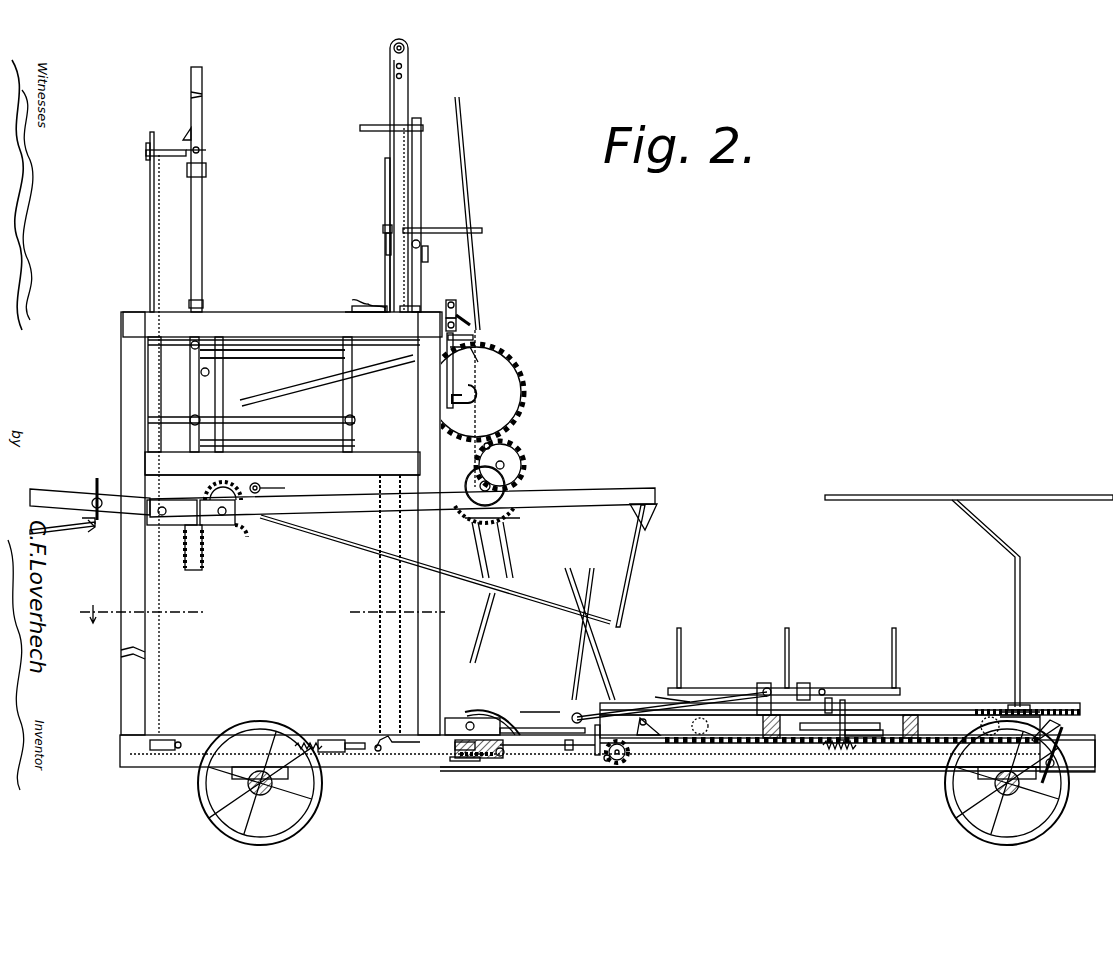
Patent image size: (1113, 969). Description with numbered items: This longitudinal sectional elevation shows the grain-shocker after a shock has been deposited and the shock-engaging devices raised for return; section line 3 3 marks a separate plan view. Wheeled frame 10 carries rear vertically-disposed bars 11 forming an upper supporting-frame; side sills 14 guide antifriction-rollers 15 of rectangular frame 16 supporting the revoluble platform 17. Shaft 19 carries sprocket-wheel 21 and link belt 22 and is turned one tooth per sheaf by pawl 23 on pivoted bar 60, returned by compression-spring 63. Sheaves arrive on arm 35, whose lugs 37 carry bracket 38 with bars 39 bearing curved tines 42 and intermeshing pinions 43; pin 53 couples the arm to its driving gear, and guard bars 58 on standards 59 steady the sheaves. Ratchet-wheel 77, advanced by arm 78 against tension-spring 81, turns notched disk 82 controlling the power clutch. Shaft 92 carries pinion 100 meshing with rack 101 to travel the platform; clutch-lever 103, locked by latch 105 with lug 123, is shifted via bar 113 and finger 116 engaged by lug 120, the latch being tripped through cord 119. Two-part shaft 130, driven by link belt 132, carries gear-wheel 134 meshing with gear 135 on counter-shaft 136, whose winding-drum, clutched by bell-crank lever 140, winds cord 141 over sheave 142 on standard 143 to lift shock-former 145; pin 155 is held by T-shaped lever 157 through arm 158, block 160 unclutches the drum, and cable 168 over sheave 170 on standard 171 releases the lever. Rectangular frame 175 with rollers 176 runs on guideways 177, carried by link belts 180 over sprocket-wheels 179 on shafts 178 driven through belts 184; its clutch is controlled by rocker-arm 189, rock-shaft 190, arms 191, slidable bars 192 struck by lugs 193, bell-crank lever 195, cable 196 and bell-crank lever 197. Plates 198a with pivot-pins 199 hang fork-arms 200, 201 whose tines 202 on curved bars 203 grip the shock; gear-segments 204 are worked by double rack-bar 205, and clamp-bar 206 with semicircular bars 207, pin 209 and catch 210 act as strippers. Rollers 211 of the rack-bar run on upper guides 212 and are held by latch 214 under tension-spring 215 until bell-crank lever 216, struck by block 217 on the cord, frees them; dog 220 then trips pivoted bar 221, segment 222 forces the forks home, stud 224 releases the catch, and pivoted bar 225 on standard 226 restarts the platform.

The section line 3 3 is at (262, 612).
The wheeled frame 10 is at (245, 735).
The vertically-disposed bars 11 is at (121, 683).
The horizontal side sills 14 is at (700, 767).
The antifriction-rollers 15 is at (820, 727).
The rectangular frame 16 is at (935, 703).
The revoluble shock-assembling platform 17 is at (657, 697).
The vertically-disposed shaft 19 is at (845, 722).
The sprocket-wheels 21 is at (905, 735).
The link belt 22 is at (860, 740).
The pawl 23 is at (352, 740).
The arm 35 is at (530, 712).
The upwardly-extending lugs 37 is at (828, 698).
The bracket 38 is at (802, 683).
The transversely-disposed bars 39 is at (767, 686).
The curved tines or prongs 42 is at (681, 632).
The intermeshing pinions 43 is at (757, 686).
The vertically-adjustable pin 53 is at (448, 718).
The curved arms or bars 58 is at (1072, 495).
The vertical standards 59 is at (1022, 605).
The pivoted bar 60 is at (330, 740).
The compression-spring 63 is at (293, 744).
The ratchet-wheel 77 is at (465, 758).
The arm 78 is at (480, 758).
The tension-spring 81 is at (501, 757).
The notched disk 82 is at (455, 762).
The transversely-disposed shaft 92 is at (627, 758).
The pinion 100 is at (598, 757).
The rack 101 is at (752, 744).
The clutch-lever 103 is at (548, 748).
The pivoted latch 105 is at (605, 762).
The shifting bar 113 is at (568, 740).
The finger 116 is at (508, 726).
The cord or chain 119 is at (406, 178).
The depending lug 120 is at (1069, 756).
The projecting lug 123 is at (605, 715).
The two-part shaft 130 is at (480, 396).
The link belt 132 is at (507, 560).
The gear-wheel 134 is at (522, 388).
The gear 135 is at (522, 455).
The counter-shaft 136 is at (505, 485).
The bell-crank lever 140 is at (524, 462).
The cord or chain 141 is at (462, 105).
The sheave 142 is at (412, 46).
The standard 143 is at (390, 75).
The shock support or former 145 is at (385, 190).
The projecting pin 155 is at (383, 228).
The T-shaped lever 157 is at (386, 238).
The lever-arm 158 is at (445, 228).
The block or projection 160 is at (492, 446).
The flexible cable or chain 168 is at (428, 256).
The sheave 170 is at (420, 244).
The standard 171 is at (421, 188).
The rectangular frame 175 is at (202, 196).
The antifriction-rollers 176 is at (190, 425).
The guideways 177 is at (305, 362).
The shafts 178 is at (195, 350).
The sprocket-wheel 179 is at (210, 373).
The link belt 180 is at (282, 465).
The link belts 184 is at (345, 385).
The rocker-arm 189 is at (458, 325).
The rock-shaft 190 is at (465, 320).
The arms 191 is at (454, 305).
The slidable bars 192 is at (352, 300).
The lugs 193 is at (203, 302).
The bell-crank lever 195 is at (351, 301).
The cable 196 is at (378, 530).
The bell-crank lever 197 is at (382, 755).
The bars or plates 198a is at (243, 537).
The pivot-pins 199 is at (172, 502).
The fork-arm 200 is at (65, 492).
The fork-arm 201 is at (655, 477).
The elongated tines 202 is at (632, 572).
The curved bars 203 is at (648, 515).
The gear-segment 204 is at (155, 528).
The double rack-bar 205 is at (193, 570).
The shock-clamp bar 206 is at (60, 532).
The semicircular bars 207 is at (477, 640).
The pin 209 is at (82, 518).
The catch 210 is at (99, 487).
The antifriction-roller 211 is at (192, 350).
The upper guides 212 is at (289, 346).
The latch 214 is at (370, 319).
The tension-spring 215 is at (416, 320).
The bell-crank lever 216 is at (473, 338).
The enlarged block 217 is at (480, 360).
The pivoted dog 220 is at (206, 150).
The pivoted bar 221 is at (368, 125).
The segment 222 is at (226, 486).
The stud 224 is at (285, 486).
The pivoted bar 225 is at (170, 150).
The standard 226 is at (150, 211).